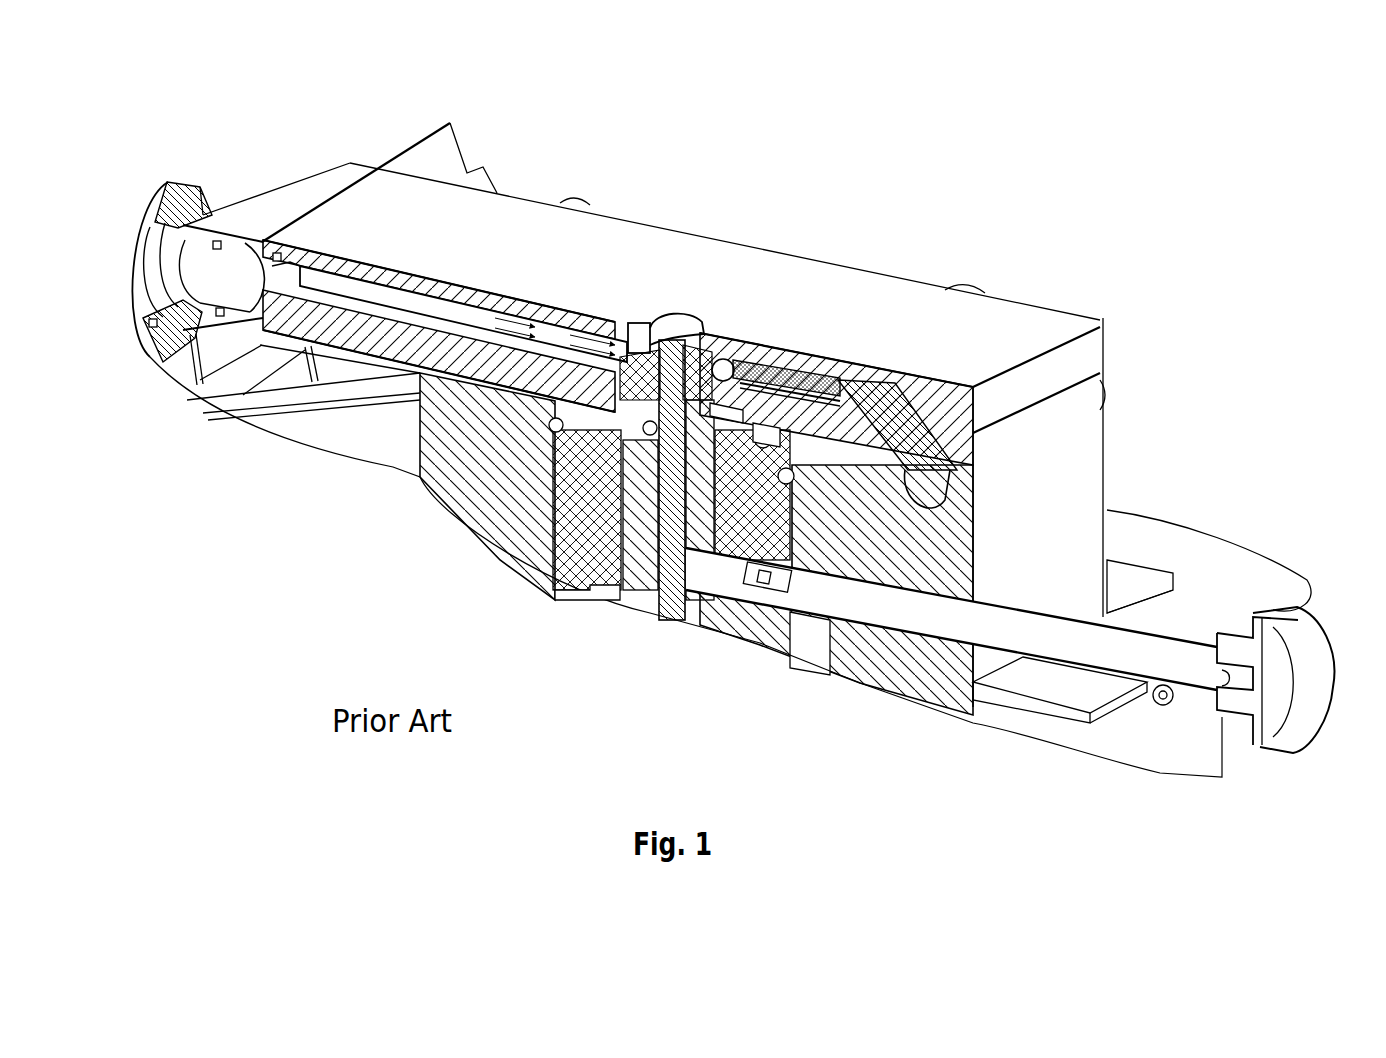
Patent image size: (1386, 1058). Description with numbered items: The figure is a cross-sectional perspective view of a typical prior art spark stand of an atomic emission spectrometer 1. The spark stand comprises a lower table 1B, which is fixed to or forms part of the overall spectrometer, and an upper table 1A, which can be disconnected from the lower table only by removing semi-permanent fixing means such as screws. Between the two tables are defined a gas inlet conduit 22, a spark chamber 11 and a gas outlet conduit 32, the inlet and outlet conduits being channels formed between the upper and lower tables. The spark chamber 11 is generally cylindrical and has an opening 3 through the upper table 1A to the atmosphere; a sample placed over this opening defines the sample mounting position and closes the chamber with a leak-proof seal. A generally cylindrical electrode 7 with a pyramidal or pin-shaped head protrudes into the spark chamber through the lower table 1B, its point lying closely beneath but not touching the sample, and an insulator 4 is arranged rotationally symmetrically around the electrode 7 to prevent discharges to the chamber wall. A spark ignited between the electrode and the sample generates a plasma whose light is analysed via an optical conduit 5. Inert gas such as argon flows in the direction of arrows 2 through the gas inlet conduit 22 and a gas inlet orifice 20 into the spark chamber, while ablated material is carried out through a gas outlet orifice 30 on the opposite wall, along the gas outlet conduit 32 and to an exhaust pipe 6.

The atomic emission spectrometer 1 is at (778, 162).
The upper table 1A is at (473, 233).
The lower table 1B is at (487, 360).
The arrows 2 is at (557, 307).
The opening 3 is at (684, 308).
The insulator 4 is at (708, 376).
The optical conduit 5 is at (203, 273).
The exhaust pipe 6 is at (930, 490).
The electrode 7 is at (668, 366).
The spark chamber 11 is at (668, 312).
The gas inlet orifice 20 is at (633, 323).
The gas inlet conduit 22 is at (472, 310).
The gas outlet orifice 30 is at (712, 366).
The gas outlet conduit 32 is at (863, 412).